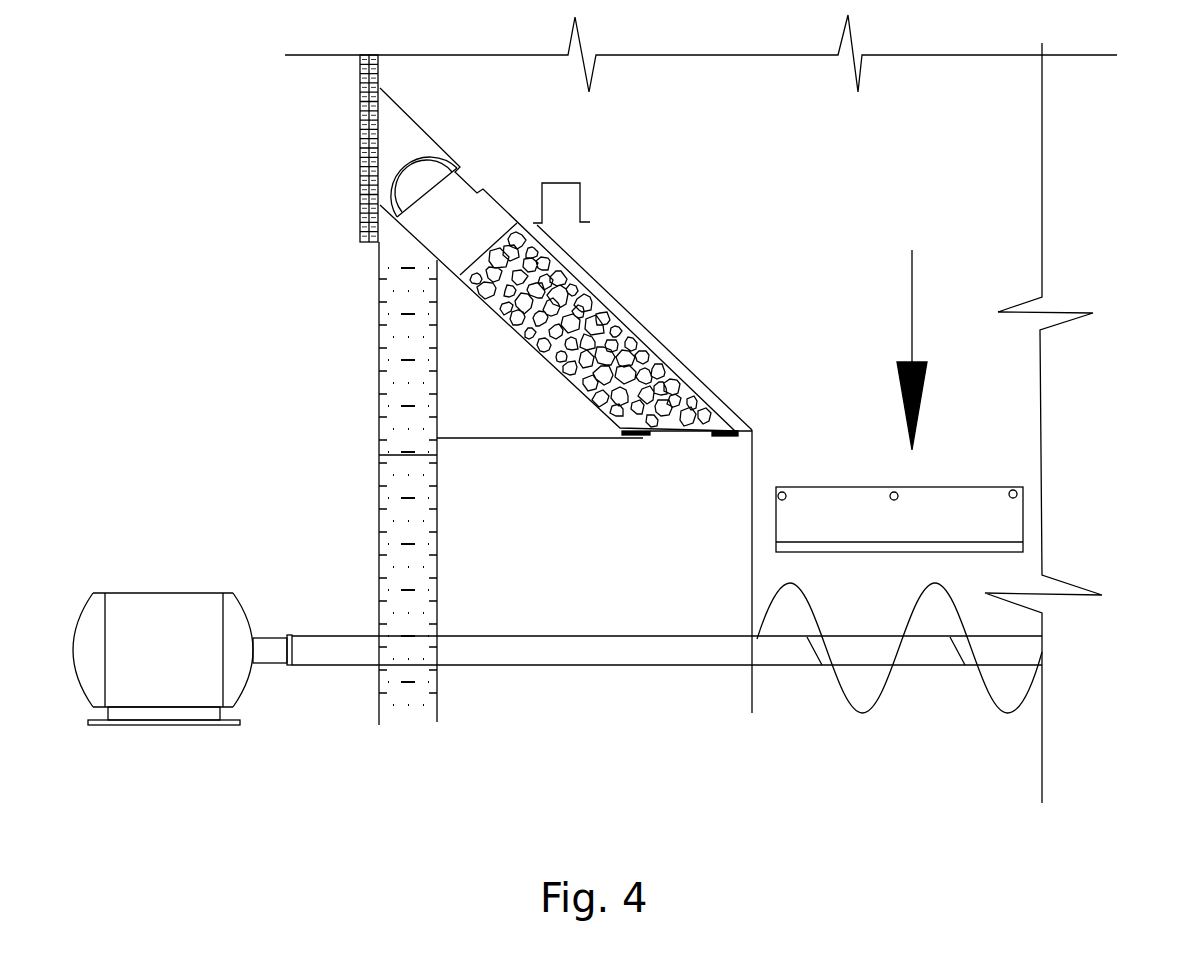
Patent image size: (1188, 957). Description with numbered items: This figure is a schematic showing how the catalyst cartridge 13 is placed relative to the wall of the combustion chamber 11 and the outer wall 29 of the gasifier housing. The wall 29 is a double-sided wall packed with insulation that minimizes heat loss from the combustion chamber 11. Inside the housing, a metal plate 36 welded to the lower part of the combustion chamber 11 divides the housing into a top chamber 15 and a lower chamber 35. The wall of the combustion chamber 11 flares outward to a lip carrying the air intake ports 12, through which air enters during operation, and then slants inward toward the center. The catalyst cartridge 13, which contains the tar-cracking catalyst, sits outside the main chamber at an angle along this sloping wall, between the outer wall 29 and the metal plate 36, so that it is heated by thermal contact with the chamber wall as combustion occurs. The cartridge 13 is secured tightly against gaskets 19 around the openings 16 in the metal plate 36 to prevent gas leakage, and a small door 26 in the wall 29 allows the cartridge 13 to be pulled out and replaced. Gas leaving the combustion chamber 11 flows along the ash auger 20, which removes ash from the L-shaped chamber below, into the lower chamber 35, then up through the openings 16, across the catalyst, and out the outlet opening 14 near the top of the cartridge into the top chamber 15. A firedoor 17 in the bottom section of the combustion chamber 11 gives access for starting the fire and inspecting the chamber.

The combustion chamber 11 is at (701, 409).
The air intake ports 12 is at (573, 226).
The catalyst cartridge 13 is at (530, 343).
The outlet opening 14 is at (478, 190).
The top chamber 15 is at (454, 181).
The openings 16 is at (680, 433).
The firedoor 17 is at (1007, 527).
The gaskets 19 is at (730, 438).
The ash auger 20 is at (788, 655).
The door 26 is at (362, 148).
The wall 29 is at (380, 310).
The lower chamber 35 is at (640, 571).
The metal plate 36 is at (495, 438).